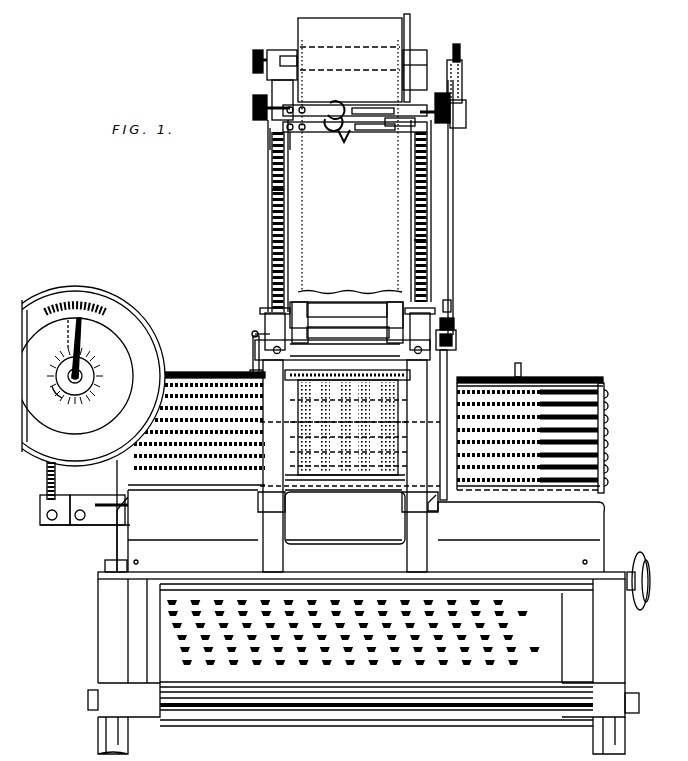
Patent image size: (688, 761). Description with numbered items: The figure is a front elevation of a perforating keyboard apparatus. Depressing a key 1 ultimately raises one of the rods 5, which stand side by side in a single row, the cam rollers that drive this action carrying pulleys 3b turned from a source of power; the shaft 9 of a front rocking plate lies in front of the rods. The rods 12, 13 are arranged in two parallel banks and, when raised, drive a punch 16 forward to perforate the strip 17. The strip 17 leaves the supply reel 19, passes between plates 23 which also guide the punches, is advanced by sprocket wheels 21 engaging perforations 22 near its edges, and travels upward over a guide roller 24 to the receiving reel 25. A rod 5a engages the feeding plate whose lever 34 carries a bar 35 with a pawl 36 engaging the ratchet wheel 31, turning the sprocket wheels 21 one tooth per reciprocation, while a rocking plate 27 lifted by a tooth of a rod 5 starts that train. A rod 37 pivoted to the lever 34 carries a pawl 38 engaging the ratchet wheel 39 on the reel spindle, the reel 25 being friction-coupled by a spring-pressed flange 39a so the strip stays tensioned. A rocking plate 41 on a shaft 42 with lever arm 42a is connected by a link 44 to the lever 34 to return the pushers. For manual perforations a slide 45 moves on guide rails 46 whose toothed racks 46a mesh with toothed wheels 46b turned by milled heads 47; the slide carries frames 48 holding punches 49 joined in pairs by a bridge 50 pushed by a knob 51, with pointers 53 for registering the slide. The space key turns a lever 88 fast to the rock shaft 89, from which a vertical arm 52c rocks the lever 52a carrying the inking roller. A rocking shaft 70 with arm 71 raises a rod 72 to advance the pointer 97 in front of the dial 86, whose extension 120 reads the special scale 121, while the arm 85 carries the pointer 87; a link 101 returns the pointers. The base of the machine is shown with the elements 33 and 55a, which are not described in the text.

The key 1 is at (236, 662).
The pulley 3b is at (648, 568).
The rod 5 is at (205, 476).
The rod 5a is at (540, 390).
The shaft 9 is at (556, 482).
The rod 12 is at (342, 350).
The rod 13 is at (345, 352).
The punch 16 is at (345, 353).
The strip 17 is at (350, 261).
The supply spool or reel 19 is at (310, 470).
The sprocket wheel 21 is at (436, 312).
The perforation 22 is at (304, 187).
The plate 23 is at (348, 353).
The guide roller 24 is at (290, 50).
The receiving spool or reel 25 is at (364, 19).
The rocking plate 27 is at (265, 322).
The ratchet wheel 31 is at (458, 337).
The rod 33 is at (576, 485).
The lever 34 is at (445, 506).
The bar 35 is at (412, 496).
The pawl 36 is at (448, 376).
The rod 37 is at (455, 271).
The pawl 38 is at (463, 88).
The ratchet wheel 39 is at (461, 53).
The spring-pressed flange 39a is at (410, 36).
The rocking plate 41 is at (305, 303).
The shaft 42 is at (354, 302).
The lever arm 42a is at (446, 300).
The link 44 is at (455, 325).
The slide 45 is at (268, 126).
The guide rail 46 is at (270, 236).
The toothed rack 46a is at (272, 190).
The toothed wheel 46b is at (280, 98).
The milled head 47 is at (252, 108).
The frame 48 is at (394, 128).
The punch 49 is at (347, 148).
The bridge 50 is at (345, 106).
The knob or handle 51 is at (365, 110).
The pivoted lever 52a is at (252, 334).
The vertical arm 52c is at (252, 360).
The pointer 53 is at (285, 135).
The lever 55a is at (534, 482).
The rocking shaft 70 is at (100, 503).
The arm 71 is at (40, 508).
The rod 72 is at (46, 490).
The arm 85 is at (68, 327).
The dial 86 is at (125, 357).
The index or pointer 87 is at (72, 300).
The lever 88 is at (521, 364).
The rock shaft 89 is at (186, 372).
The index or pointer 97 is at (83, 344).
The link or rod 101 is at (117, 540).
The extension 120 is at (60, 398).
The special scale 121 is at (77, 388).